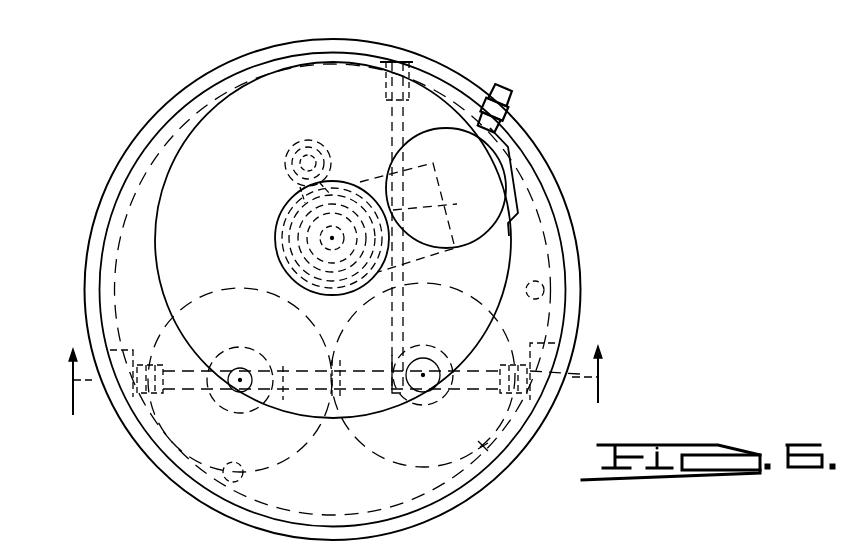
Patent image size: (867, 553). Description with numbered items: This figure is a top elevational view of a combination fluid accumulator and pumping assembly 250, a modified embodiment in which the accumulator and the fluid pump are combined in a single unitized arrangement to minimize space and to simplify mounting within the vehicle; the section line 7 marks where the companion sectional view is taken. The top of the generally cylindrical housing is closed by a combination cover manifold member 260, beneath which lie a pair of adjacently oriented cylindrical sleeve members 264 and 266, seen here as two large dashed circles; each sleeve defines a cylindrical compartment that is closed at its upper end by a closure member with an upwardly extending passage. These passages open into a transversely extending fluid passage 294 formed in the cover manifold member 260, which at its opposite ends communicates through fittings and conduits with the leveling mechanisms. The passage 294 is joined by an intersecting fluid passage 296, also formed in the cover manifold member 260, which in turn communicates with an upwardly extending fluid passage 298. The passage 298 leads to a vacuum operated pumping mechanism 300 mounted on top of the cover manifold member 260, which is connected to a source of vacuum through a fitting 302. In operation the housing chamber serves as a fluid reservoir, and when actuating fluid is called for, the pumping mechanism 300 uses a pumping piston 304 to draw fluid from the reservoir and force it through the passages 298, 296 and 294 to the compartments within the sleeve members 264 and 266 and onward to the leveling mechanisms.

The section line 7- 7 is at (334, 382).
The combination fluid accumulator and pumping assembly 250 is at (588, 181).
The combination cover manifold member 260 is at (268, 484).
The sleeve member 264 is at (160, 480).
The sleeve member 266 is at (486, 447).
The transversely extending fluid passage 294 is at (244, 380).
The intersecting fluid passage 296 is at (431, 342).
The upwardly extending fluid passage 298 is at (414, 220).
The vacuum operated pumping mechanism 300 is at (156, 262).
The fitting 302 is at (505, 84).
The pumping piston 304 is at (274, 229).